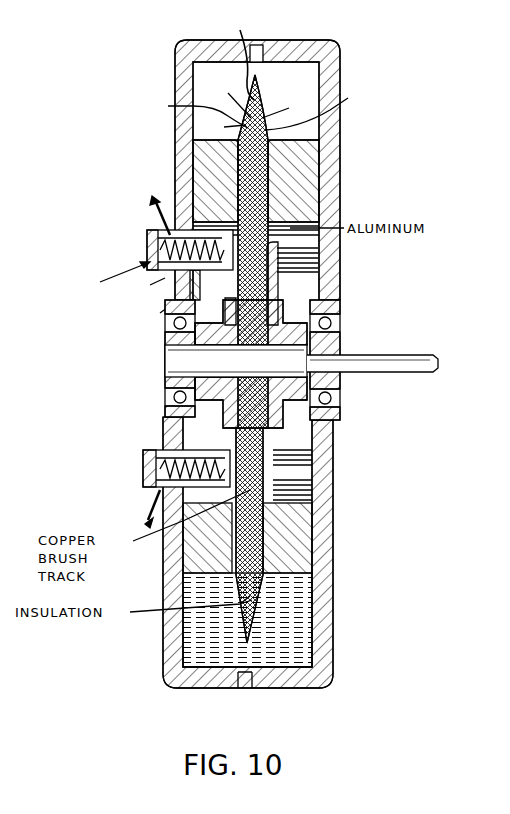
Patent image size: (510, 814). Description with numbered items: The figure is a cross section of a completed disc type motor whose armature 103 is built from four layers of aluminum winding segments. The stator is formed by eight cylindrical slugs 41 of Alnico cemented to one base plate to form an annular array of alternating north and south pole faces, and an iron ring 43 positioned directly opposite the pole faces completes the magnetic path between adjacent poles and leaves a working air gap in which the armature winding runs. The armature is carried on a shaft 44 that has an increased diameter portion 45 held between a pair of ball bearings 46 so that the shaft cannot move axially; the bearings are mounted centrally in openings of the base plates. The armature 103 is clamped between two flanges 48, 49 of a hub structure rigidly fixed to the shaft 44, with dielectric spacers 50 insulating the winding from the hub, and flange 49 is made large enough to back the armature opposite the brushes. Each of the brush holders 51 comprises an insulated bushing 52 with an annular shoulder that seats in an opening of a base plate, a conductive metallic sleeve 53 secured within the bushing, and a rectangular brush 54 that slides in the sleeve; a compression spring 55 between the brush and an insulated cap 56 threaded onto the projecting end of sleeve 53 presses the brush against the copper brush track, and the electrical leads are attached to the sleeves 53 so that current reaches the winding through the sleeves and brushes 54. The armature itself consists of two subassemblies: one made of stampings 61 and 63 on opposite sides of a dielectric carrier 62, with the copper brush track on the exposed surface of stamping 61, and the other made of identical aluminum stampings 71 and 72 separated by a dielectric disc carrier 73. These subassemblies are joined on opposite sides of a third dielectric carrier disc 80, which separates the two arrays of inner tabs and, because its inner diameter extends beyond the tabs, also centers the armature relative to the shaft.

The cylindrical slugs 41 is at (322, 207).
The iron ring 43 is at (207, 158).
The shaft 44 is at (405, 358).
The increased diameter portion 45 is at (300, 358).
The ball bearings 46 is at (172, 336).
The flange 48 is at (205, 410).
The flange 49 is at (251, 322).
The dielectric spacers 50 is at (272, 292).
The brush holders 51 is at (108, 482).
The insulated bushing 52 is at (214, 222).
The conductive metallic sleeve 53 is at (153, 313).
The rectangular brush 54 is at (230, 300).
The compression spring 55 is at (142, 290).
The insulated cap 56 is at (147, 243).
The stamping 61 is at (224, 128).
The dielectric carrier 62 is at (227, 100).
The stamping 63 is at (197, 112).
The aluminum stamping 71 is at (285, 107).
The aluminum stamping 72 is at (268, 138).
The dielectric disc carrier 73 is at (316, 108).
The dielectric carrier disc 80 is at (262, 110).
The armature 103 is at (232, 56).